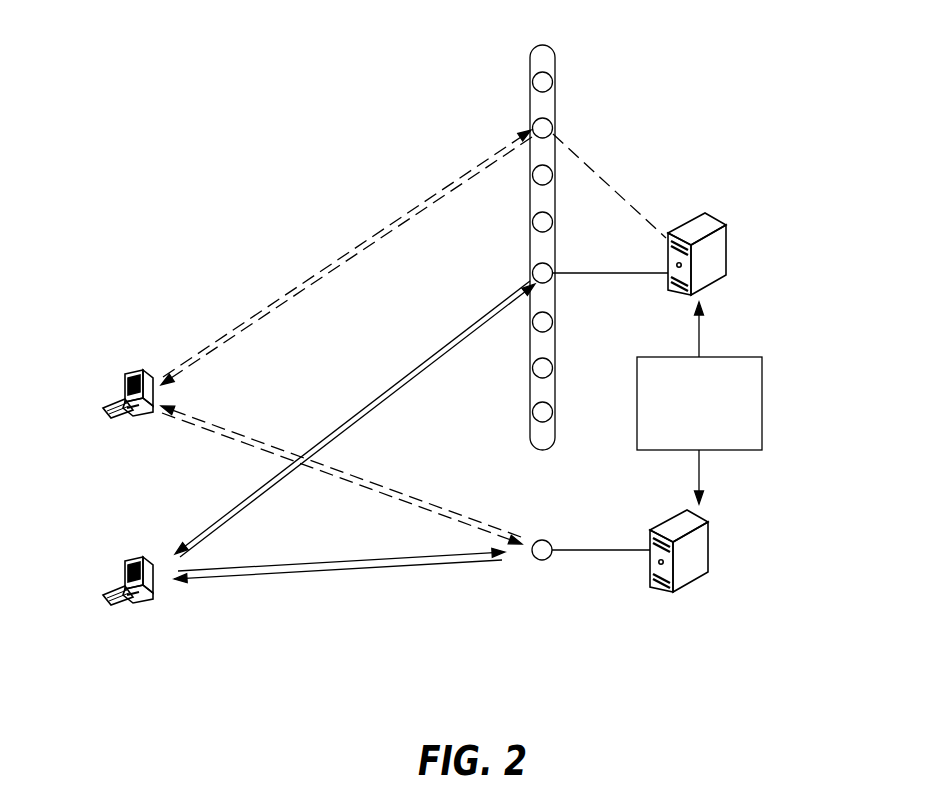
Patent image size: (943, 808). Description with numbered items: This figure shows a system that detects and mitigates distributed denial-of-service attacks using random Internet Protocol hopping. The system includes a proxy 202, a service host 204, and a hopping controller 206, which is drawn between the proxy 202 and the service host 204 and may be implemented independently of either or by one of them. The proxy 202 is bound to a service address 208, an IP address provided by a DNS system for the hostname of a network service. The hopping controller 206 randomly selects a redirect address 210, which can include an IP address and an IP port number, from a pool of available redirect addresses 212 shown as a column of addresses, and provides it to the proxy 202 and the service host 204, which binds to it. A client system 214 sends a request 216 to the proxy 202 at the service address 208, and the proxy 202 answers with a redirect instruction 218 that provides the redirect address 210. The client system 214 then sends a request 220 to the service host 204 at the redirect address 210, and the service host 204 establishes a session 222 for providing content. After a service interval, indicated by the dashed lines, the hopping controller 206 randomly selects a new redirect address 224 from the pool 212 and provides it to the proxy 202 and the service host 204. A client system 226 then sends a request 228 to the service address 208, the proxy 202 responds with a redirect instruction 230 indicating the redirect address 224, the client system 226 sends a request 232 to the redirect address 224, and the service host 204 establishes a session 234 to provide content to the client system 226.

The proxy 202 is at (723, 539).
The service host 204 is at (742, 243).
The hopping controller 206 is at (744, 403).
The service address 208 is at (555, 571).
The redirect address 210 is at (582, 342).
The pool of available redirect addresses 212 is at (581, 227).
The client system 214 is at (100, 573).
The request 216 is at (341, 544).
The redirect instruction 218 is at (338, 588).
The request 220 is at (352, 417).
The session 222 is at (357, 420).
The redirect address 224 is at (588, 152).
The client system 226 is at (100, 385).
The request 228 is at (341, 458).
The redirect instruction 230 is at (342, 478).
The request 232 is at (347, 253).
The session 234 is at (346, 261).